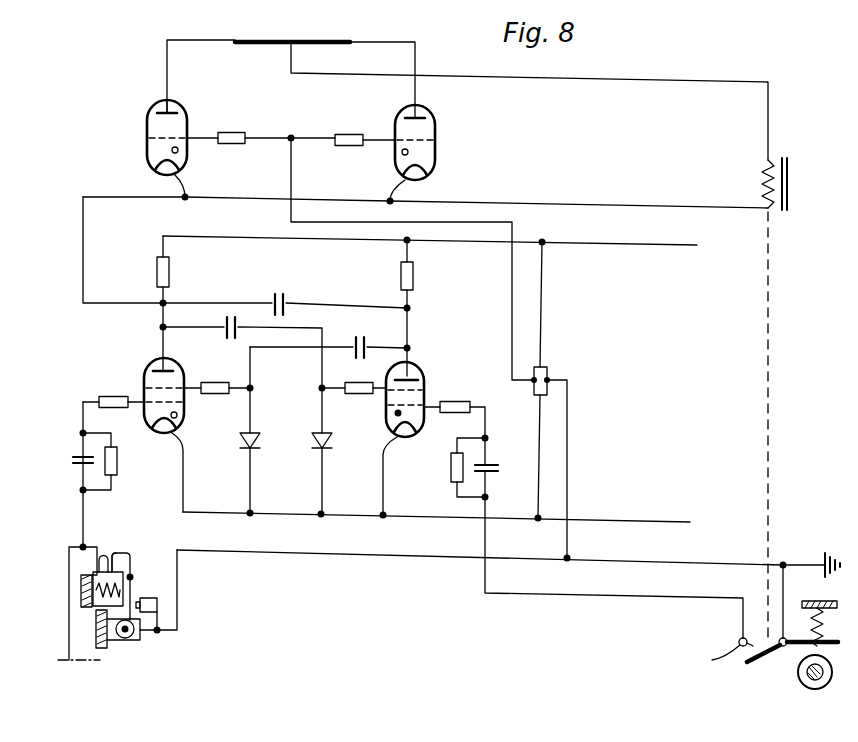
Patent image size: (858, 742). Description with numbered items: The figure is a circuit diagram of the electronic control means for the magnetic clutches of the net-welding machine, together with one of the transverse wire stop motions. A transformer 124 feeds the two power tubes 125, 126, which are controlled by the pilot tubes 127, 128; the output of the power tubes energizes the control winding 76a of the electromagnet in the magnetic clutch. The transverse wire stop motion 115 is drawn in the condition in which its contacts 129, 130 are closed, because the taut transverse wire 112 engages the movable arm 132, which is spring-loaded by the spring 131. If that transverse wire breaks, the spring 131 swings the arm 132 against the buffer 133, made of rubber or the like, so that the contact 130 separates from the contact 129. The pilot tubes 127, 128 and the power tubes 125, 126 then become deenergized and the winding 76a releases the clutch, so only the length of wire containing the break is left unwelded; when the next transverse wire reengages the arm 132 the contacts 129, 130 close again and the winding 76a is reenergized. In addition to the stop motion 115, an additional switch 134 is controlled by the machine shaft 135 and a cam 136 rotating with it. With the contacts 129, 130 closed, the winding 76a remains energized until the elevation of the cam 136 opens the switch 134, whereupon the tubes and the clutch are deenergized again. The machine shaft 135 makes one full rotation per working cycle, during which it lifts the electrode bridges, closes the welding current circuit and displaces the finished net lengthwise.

The transformer 124 is at (330, 42).
The power tube 125 is at (150, 141).
The power tube 126 is at (437, 125).
The control winding 76a is at (762, 178).
The pilot tube 127 is at (148, 366).
The pilot tube 128 is at (413, 372).
The contact 129 is at (100, 557).
The contact 130 is at (114, 553).
The transverse wire 112 is at (132, 576).
The spring 131 is at (118, 590).
The buffer 133 is at (158, 604).
The movable arm 132 is at (131, 620).
The transverse wire stop motion 115 is at (92, 657).
The switch 134 is at (720, 663).
The machine shaft 135 is at (806, 680).
The cam 136 is at (812, 655).